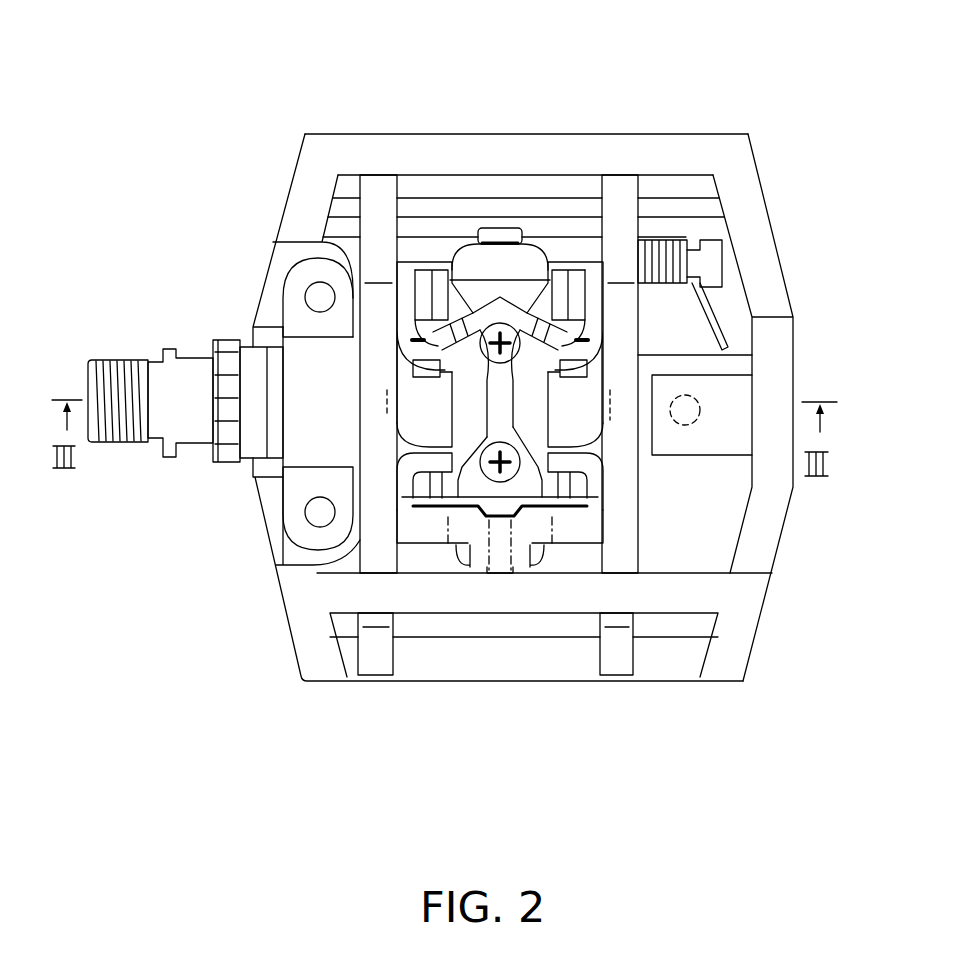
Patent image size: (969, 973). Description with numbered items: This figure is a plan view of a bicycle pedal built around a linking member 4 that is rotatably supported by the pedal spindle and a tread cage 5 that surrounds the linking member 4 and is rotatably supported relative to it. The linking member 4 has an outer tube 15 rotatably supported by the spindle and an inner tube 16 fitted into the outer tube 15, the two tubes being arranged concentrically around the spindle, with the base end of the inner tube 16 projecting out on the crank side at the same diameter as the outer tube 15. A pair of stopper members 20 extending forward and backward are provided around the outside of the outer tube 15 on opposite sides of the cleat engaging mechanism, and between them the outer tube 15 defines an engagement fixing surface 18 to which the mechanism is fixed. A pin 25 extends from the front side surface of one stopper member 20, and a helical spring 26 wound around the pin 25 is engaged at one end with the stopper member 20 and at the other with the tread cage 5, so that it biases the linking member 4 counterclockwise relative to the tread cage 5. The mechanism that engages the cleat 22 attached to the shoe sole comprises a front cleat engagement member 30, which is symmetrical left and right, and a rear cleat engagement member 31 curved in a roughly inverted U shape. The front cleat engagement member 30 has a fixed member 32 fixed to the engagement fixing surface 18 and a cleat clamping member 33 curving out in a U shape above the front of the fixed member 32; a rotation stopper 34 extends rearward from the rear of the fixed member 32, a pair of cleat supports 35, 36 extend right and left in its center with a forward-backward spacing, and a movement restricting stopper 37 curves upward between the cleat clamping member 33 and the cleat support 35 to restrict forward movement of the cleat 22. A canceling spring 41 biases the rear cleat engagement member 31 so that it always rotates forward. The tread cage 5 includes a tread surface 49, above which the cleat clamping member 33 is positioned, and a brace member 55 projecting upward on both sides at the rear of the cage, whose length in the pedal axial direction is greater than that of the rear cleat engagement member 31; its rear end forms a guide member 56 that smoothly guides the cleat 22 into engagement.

The linking member 4 is at (322, 222).
The tread cage 5 is at (490, 126).
The outer tube 15 is at (277, 363).
The inner tube 16 is at (245, 463).
The engagement fixing surface 18 is at (570, 403).
The stopper members 20 is at (378, 187).
The cleat 22 is at (607, 430).
The pin 25 is at (720, 263).
The helical spring 26 is at (680, 232).
The front cleat engagement member 30 is at (525, 285).
The rear cleat engagement member 31 is at (540, 575).
The fixed member 32 is at (416, 575).
The cleat clamping member 33 is at (467, 225).
The rotation stopper 34 is at (467, 575).
The cleat support 35 is at (420, 365).
The cleat support 36 is at (445, 500).
The movement restricting stopper 37 is at (420, 268).
The canceling spring 41 is at (585, 200).
The tread surface 49 is at (718, 158).
The brace member 55 is at (687, 590).
The guide member 56 is at (622, 590).